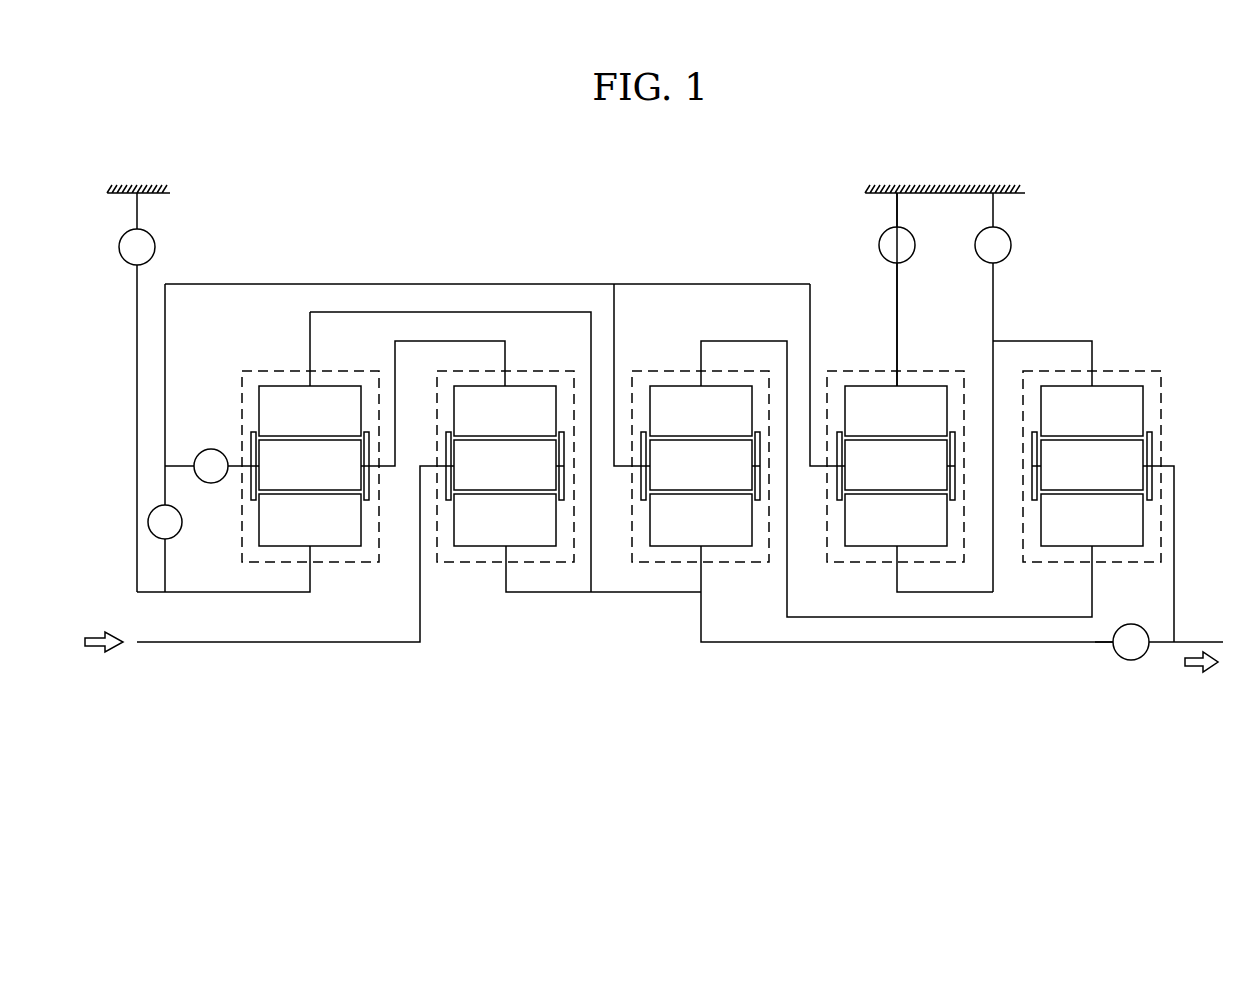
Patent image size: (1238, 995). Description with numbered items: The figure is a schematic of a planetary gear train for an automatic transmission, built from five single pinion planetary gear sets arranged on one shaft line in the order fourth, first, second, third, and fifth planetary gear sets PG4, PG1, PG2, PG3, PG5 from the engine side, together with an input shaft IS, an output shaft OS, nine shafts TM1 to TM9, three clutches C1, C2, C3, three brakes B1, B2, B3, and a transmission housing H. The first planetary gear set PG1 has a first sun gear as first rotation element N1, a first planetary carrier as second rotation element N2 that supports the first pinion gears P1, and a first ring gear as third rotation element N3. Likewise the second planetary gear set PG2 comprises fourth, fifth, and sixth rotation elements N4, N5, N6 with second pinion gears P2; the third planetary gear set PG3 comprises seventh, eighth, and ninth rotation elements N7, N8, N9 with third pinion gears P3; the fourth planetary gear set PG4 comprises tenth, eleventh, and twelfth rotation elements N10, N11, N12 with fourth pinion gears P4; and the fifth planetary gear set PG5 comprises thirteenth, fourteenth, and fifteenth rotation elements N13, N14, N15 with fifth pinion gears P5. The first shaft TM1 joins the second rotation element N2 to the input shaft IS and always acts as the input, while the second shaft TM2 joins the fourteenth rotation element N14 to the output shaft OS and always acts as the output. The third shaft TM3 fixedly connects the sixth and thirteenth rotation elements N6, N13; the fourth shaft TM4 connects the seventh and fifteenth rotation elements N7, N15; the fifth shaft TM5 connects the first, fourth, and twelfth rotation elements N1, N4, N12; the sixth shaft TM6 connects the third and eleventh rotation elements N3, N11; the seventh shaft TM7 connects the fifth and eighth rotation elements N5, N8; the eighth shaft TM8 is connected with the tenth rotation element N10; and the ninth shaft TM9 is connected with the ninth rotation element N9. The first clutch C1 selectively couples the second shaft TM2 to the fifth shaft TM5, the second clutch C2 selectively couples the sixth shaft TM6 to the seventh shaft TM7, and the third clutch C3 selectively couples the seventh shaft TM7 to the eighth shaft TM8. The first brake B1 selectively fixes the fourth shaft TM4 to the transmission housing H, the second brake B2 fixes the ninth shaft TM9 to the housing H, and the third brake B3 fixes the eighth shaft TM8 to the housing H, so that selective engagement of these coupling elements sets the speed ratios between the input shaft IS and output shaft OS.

The transmission housing H is at (138, 193).
The first brake B1 is at (993, 392).
The second brake B2 is at (897, 289).
The third brake B3 is at (137, 392).
The first clutch C1 is at (1159, 642).
The second clutch C2 is at (208, 466).
The third clutch C3 is at (165, 438).
The first shaft TM1 is at (420, 610).
The second shaft TM2 is at (1174, 600).
The third shaft TM3 is at (813, 617).
The fourth shaft TM4 is at (994, 297).
The fifth shaft TM5 is at (608, 592).
The sixth shaft TM6 is at (440, 341).
The seventh shaft TM7 is at (560, 284).
The eighth shaft TM8 is at (213, 592).
The ninth shaft TM9 is at (897, 330).
The input shaft IS is at (157, 642).
The output shaft OS is at (1150, 645).
The first planetary gear set PG1 is at (484, 503).
The second planetary gear set PG2 is at (674, 496).
The third planetary gear set PG3 is at (881, 496).
The fourth planetary gear set PG4 is at (283, 533).
The fifth planetary gear set PG5 is at (1094, 533).
The first pinion gears P1 is at (505, 465).
The second pinion gears P2 is at (701, 465).
The third pinion gears P3 is at (896, 465).
The fourth pinion gears P4 is at (310, 465).
The fifth pinion gears P5 is at (1092, 465).
The first rotation element N1 is at (505, 520).
The second rotation element N2 is at (484, 432).
The third rotation element N3 is at (505, 411).
The fourth rotation element N4 is at (701, 520).
The fifth rotation element N5 is at (669, 426).
The sixth rotation element N6 is at (701, 411).
The seventh rotation element N7 is at (896, 520).
The eighth rotation element N8 is at (881, 426).
The ninth rotation element N9 is at (896, 411).
The tenth rotation element N10 is at (310, 520).
The eleventh rotation element N11 is at (251, 494).
The twelfth rotation element N12 is at (310, 411).
The thirteenth rotation element N13 is at (1092, 520).
The fourteenth rotation element N14 is at (1094, 463).
The fifteenth rotation element N15 is at (1092, 411).